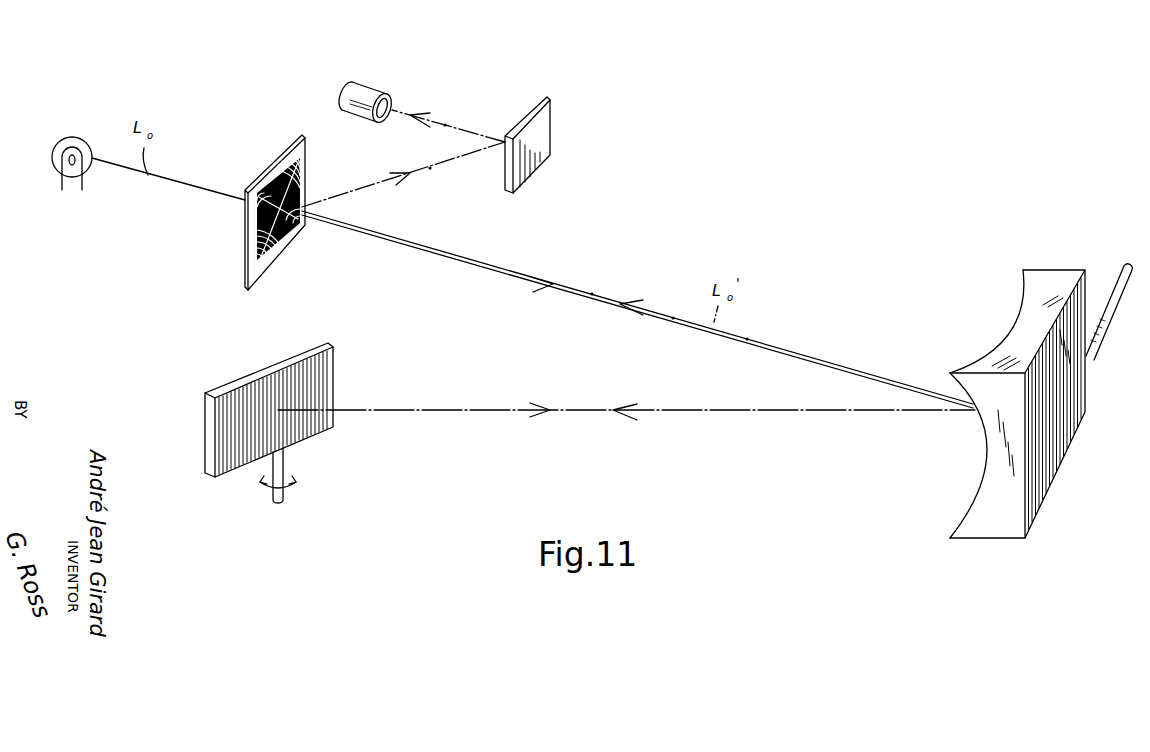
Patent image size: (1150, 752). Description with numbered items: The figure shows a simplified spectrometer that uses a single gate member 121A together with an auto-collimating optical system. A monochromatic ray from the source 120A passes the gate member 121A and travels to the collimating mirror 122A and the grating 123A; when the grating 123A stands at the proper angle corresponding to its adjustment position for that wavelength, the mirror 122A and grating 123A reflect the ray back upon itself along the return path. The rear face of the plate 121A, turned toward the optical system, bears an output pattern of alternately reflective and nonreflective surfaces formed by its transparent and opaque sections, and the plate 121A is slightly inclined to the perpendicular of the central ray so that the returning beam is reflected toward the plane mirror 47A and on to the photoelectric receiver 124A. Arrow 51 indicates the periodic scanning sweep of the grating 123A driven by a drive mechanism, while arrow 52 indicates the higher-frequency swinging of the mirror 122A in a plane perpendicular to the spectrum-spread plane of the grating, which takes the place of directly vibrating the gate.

The source 120A is at (66, 138).
The gate member 121A is at (292, 234).
The collimating mirror 122A is at (1043, 480).
The grating 123A is at (338, 363).
The photoelectric receiver 124A is at (364, 92).
The plane mirror 47A is at (552, 155).
The arrow 51 is at (288, 490).
The arrow 52 is at (1130, 290).